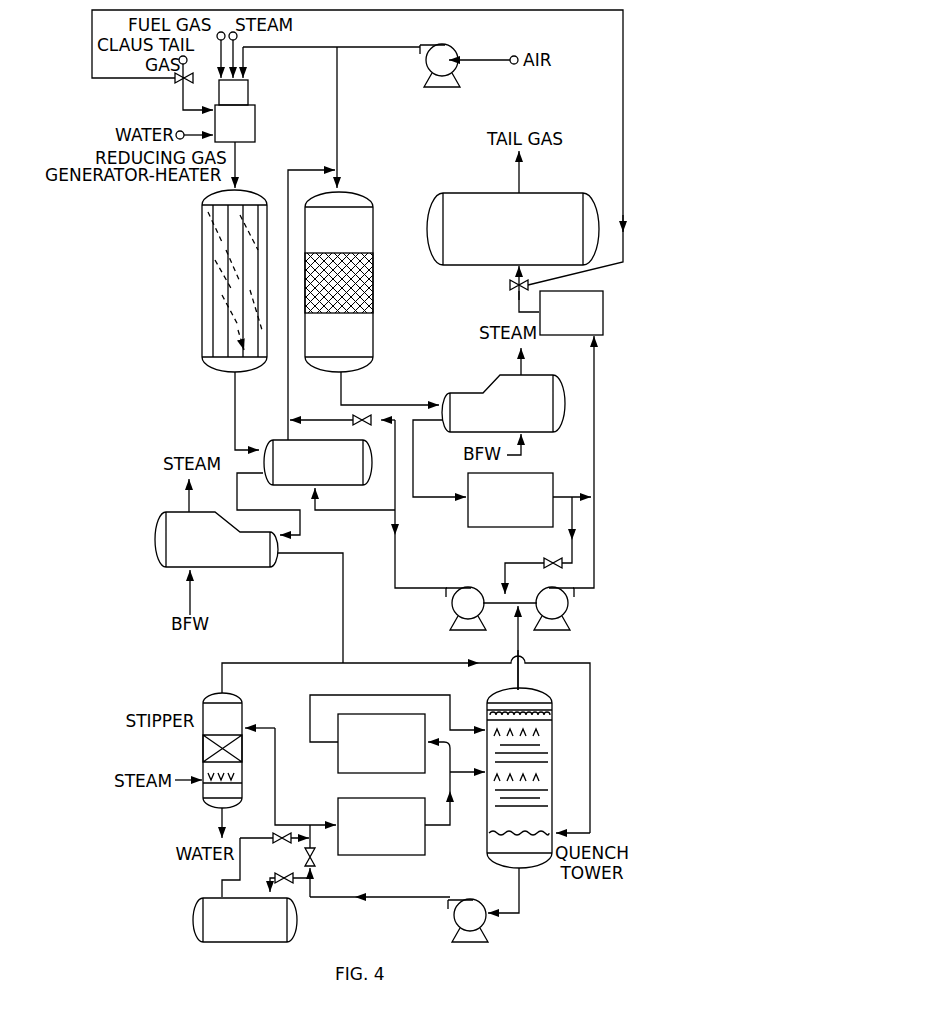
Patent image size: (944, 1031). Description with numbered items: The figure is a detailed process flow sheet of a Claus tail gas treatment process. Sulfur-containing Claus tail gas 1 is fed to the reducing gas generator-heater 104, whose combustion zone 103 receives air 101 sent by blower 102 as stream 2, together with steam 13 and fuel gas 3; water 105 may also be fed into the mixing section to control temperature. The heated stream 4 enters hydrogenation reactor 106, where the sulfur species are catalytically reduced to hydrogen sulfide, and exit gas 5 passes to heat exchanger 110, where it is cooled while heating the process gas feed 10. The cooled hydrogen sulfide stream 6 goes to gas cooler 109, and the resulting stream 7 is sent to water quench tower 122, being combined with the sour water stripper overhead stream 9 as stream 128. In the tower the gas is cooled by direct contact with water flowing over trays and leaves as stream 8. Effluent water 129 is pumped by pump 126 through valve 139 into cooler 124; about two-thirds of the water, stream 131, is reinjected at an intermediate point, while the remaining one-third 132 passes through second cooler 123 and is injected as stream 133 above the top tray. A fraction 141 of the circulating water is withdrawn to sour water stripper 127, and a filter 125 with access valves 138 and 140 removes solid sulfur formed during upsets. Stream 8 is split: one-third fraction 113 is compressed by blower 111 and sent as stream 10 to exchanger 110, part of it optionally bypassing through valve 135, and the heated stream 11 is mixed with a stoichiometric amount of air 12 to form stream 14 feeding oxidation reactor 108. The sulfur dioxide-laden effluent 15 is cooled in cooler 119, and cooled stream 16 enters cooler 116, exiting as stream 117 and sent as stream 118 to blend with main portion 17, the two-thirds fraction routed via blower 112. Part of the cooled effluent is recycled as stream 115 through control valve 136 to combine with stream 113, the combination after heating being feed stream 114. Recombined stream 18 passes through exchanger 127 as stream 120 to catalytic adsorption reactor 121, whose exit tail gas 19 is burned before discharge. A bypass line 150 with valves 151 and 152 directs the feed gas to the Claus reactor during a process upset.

The Claus tail gas 1 is at (185, 102).
The air stream 2 is at (298, 46).
The fuel gas 3 is at (221, 50).
The heated stream 4 is at (237, 167).
The exit gas 5 is at (235, 416).
The hydrogen sulfide stream 6 is at (237, 496).
The hydrogen sulfide-laden stream 7 is at (343, 626).
The cooled hydrogen sulfide-rich stream 8 is at (518, 640).
The stripper overhead gas stream 9 is at (290, 663).
The process gas feed 10 is at (394, 567).
The heated feed stream 11 is at (287, 180).
The air 12 is at (339, 86).
The steam 13 is at (245, 52).
The air-hydrogen sulfide stream 14 is at (341, 178).
The sulfur dioxide-laden stream 15 is at (357, 405).
The cooled stream 16 is at (413, 456).
The main portion 17 is at (594, 522).
The recombined stream 18 is at (594, 405).
The exit tail gas 19 is at (519, 169).
The air 101 is at (480, 62).
The blower 102 is at (455, 46).
The combustion zone 103 is at (248, 97).
The reducing gas generator-heater 104 is at (255, 121).
The water 105 is at (180, 130).
The hydrogenation reactor 106 is at (204, 366).
The oxidation reactor 108 is at (360, 192).
The gas cooler 109 is at (233, 568).
The heat exchanger 110 is at (369, 479).
The blower 111 is at (452, 611).
The blower 112 is at (570, 612).
The one-third fraction 113 is at (514, 603).
The feed stream 114 is at (492, 603).
The recycle stream 115 is at (504, 580).
The cooler 116 is at (468, 481).
The cooler exit stream 117 is at (571, 490).
The blended stream 118 is at (578, 496).
The cooler 119 is at (451, 393).
The input stream 120 is at (519, 298).
The catalytic adsorption reactor 121 is at (545, 192).
The water quench tower 122 is at (487, 838).
The second cooler 123 is at (338, 755).
The cooler 124 is at (338, 806).
The filter 125 is at (199, 897).
The pump 126 is at (453, 922).
The sour water stripper 127 is at (603, 305).
The combined stream 128 is at (590, 833).
The effluent water 129 is at (520, 912).
The water stream 131 is at (458, 776).
The remaining one-third 132 is at (467, 761).
The injected stream 133 is at (393, 695).
The valve 135 is at (354, 420).
The control valve 136 is at (562, 566).
The access valve 138 is at (280, 877).
The valve 139 is at (313, 863).
The access valve 140 is at (276, 837).
The withdrawn water fraction 141 is at (277, 728).
The bypass line 150 is at (535, 12).
The valve 151 is at (176, 79).
The valve 152 is at (511, 285).